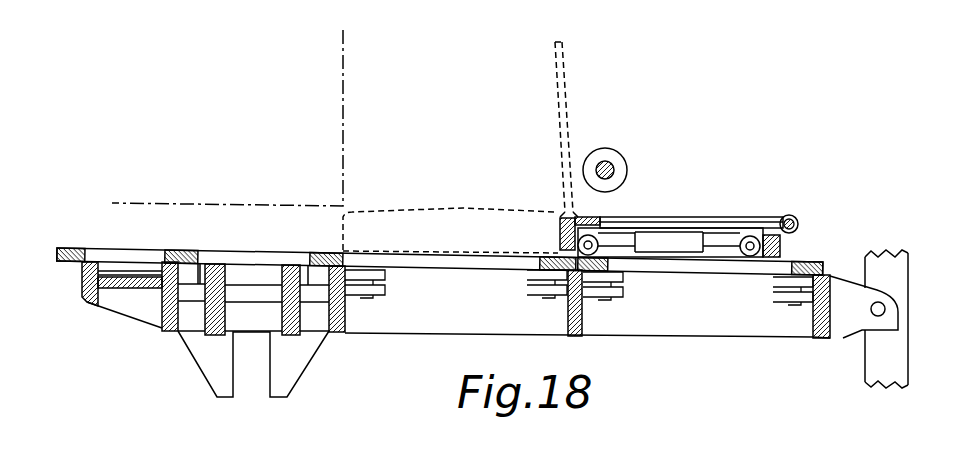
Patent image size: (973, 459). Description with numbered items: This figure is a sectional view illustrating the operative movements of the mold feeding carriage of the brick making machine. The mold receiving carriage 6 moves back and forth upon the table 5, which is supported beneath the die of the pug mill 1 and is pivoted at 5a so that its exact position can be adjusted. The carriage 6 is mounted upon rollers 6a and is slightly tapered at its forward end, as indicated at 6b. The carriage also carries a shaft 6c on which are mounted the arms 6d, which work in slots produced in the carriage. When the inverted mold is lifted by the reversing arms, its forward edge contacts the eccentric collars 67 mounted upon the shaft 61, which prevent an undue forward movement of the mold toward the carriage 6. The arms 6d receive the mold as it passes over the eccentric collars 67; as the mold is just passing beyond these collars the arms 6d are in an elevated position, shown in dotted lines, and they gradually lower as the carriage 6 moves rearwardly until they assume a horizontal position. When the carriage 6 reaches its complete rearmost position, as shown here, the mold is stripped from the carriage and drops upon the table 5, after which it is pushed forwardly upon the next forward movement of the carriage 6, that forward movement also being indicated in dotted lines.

The pug mill 1 is at (227, 118).
The table 5 is at (714, 301).
The pivot of the table 5a is at (878, 309).
The mold receiving carriage 6 is at (467, 222).
The rollers 6a is at (563, 85).
The tapered forward end 6b is at (597, 212).
The shaft 6c is at (800, 224).
The arms 6d is at (692, 222).
The shaft 61 is at (611, 162).
The eccentric collars 67 is at (620, 172).